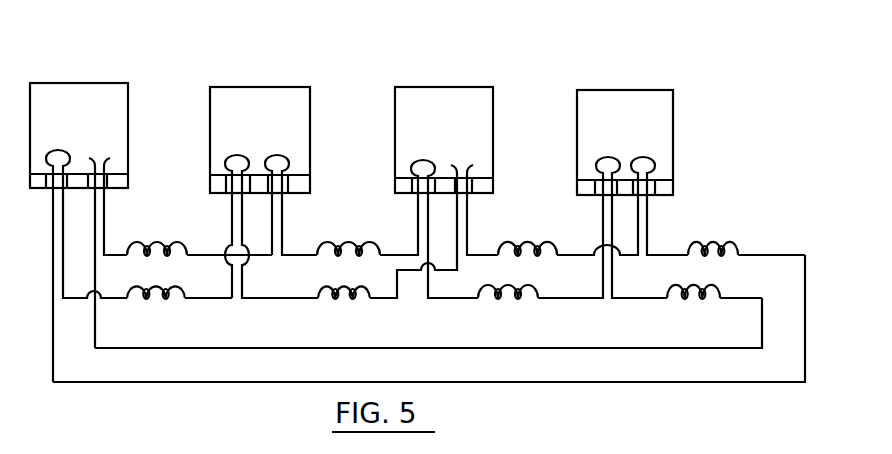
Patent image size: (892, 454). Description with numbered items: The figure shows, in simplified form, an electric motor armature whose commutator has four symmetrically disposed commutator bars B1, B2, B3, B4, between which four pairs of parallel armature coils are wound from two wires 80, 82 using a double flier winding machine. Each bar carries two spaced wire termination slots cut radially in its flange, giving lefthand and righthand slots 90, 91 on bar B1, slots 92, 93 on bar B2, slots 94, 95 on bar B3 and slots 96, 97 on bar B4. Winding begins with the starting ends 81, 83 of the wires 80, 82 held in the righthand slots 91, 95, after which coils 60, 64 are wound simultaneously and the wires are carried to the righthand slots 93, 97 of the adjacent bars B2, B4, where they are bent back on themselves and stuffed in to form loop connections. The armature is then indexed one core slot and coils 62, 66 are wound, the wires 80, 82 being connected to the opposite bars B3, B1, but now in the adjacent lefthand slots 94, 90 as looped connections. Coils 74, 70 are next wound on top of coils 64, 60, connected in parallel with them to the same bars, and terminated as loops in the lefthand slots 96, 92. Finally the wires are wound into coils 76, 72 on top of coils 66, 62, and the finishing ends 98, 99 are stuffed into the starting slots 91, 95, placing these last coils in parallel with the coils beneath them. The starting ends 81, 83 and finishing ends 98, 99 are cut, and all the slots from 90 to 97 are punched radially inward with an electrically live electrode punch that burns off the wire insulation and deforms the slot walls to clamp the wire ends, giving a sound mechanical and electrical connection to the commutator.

The commutator bar B1 is at (75, 98).
The commutator bar B2 is at (256, 103).
The commutator bar B3 is at (440, 103).
The commutator bar B4 is at (622, 107).
The armature coil 60 is at (165, 240).
The armature coil 62 is at (352, 240).
The armature coil 64 is at (537, 240).
The armature coil 66 is at (712, 245).
The armature coil 70 is at (157, 300).
The armature coil 72 is at (345, 300).
The armature coil 74 is at (507, 300).
The armature coil 76 is at (690, 300).
The wire 80 is at (103, 230).
The wire 82 is at (470, 232).
The starting end of wire 81 is at (112, 162).
The starting end of wire 83 is at (517, 164).
The lefthand slot 90 is at (42, 189).
The righthand slot 91 is at (117, 157).
The lefthand slot 92 is at (219, 195).
The righthand slot 93 is at (290, 196).
The lefthand slot 94 is at (413, 192).
The righthand slot 95 is at (460, 163).
The lefthand slot 96 is at (592, 196).
The righthand slot 97 is at (657, 196).
The finishing end of wire 98 is at (86, 160).
The finishing end of wire 99 is at (450, 163).